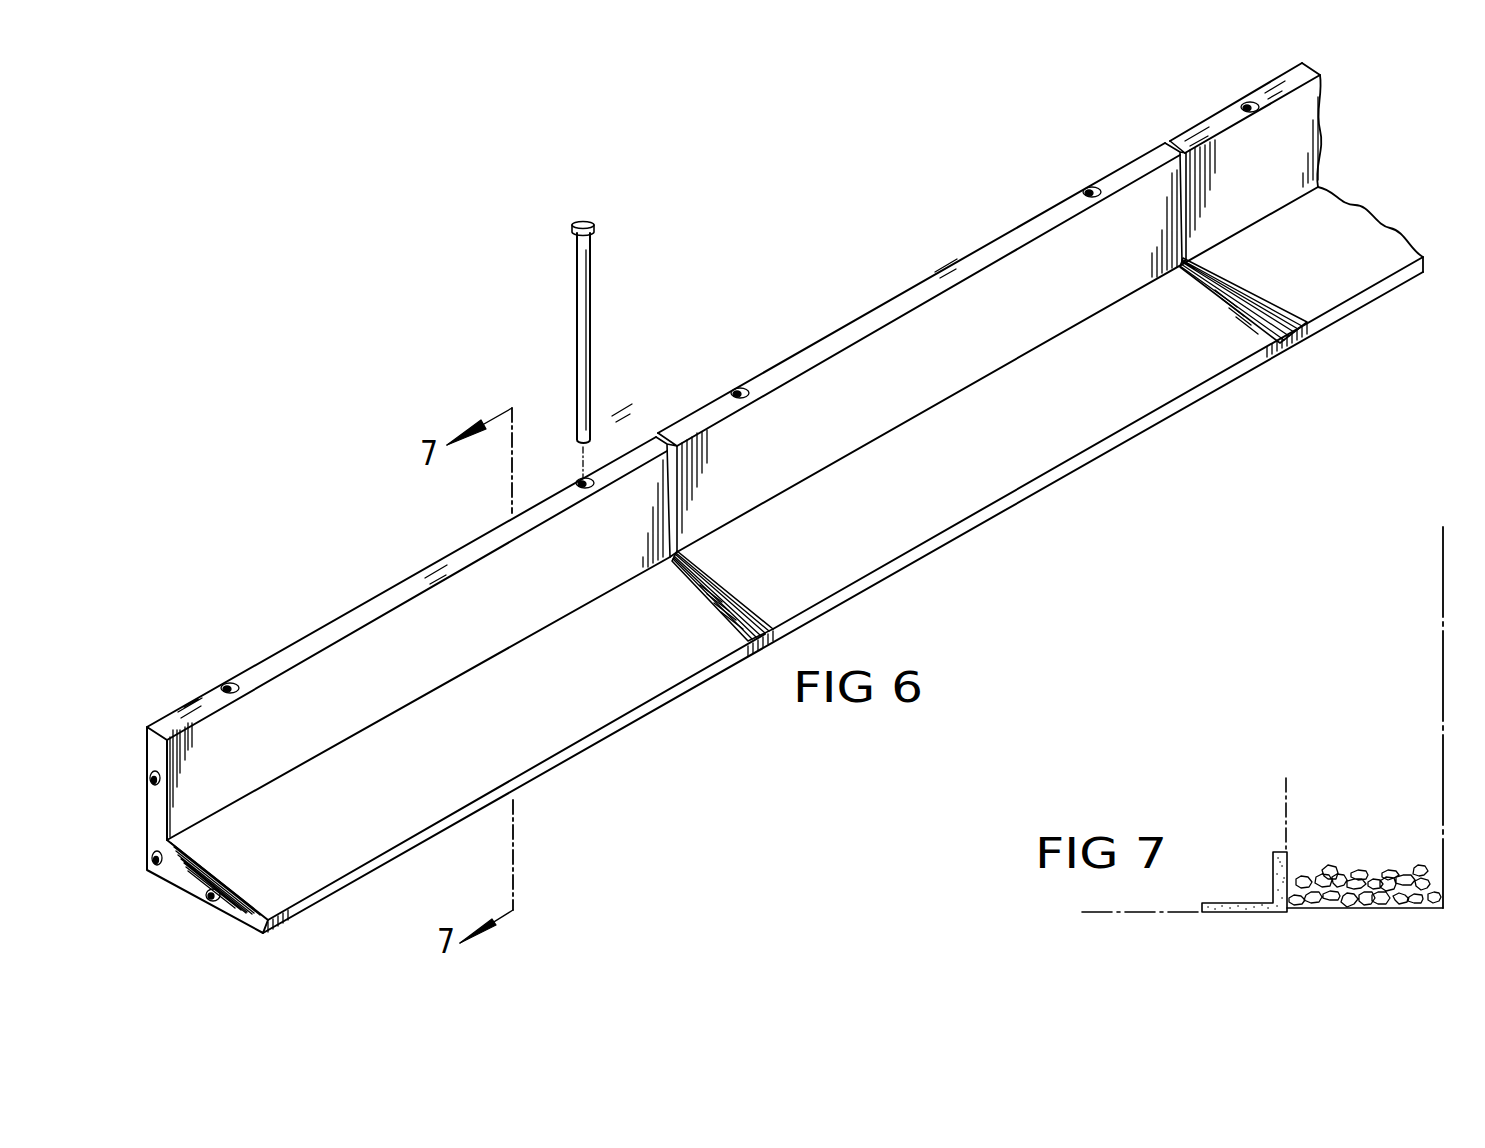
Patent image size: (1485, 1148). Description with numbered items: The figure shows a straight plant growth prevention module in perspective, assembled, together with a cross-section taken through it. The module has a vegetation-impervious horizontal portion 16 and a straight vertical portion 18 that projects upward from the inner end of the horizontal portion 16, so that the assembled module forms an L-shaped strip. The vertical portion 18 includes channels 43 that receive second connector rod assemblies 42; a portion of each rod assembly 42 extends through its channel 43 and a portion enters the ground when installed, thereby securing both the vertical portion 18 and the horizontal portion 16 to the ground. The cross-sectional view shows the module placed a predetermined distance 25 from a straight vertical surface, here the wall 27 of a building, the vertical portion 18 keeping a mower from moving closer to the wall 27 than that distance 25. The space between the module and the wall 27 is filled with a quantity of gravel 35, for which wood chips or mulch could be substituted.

In FIG. 6, the vegetation-impervious horizontal portion 16 is at (620, 699).
In FIG. 6, the vertical portion 18 is at (367, 605).
In FIG. 6, the second connector rod assembly 42 is at (597, 332).
In FIG. 6, the channel 43 is at (580, 478).
In FIG. 7, the predetermined distance 25 is at (1285, 803).
In FIG. 7, the wall 27 is at (1442, 682).
In FIG. 7, the gravel 35 is at (1340, 870).